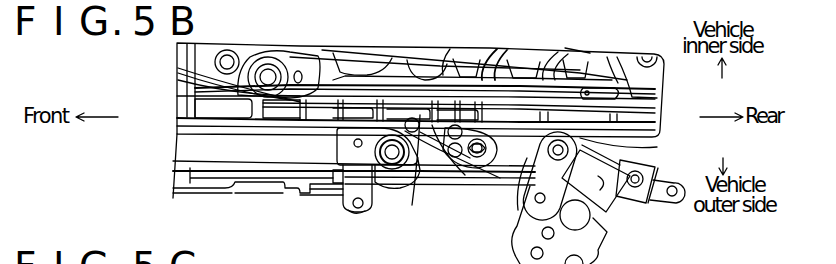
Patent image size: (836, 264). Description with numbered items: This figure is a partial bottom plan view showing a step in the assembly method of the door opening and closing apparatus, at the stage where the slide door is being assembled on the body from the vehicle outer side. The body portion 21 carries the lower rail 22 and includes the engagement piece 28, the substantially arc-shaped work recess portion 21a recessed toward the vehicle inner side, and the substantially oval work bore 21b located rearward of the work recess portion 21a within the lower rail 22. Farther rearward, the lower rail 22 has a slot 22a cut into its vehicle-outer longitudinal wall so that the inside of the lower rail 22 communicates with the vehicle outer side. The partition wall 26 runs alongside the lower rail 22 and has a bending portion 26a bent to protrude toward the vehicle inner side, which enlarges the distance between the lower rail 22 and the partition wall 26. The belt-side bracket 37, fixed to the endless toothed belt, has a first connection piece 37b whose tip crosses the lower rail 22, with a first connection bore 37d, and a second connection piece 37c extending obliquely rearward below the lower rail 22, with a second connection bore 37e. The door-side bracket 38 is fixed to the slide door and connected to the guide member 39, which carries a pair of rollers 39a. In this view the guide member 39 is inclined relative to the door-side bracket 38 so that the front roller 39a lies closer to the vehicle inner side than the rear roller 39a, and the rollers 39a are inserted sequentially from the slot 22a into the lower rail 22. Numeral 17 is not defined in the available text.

The seat slide device 17 is at (596, 0).
The body portion 21 is at (418, 186).
The work recess portion 21a is at (338, 46).
The work bore 21b is at (493, 176).
The lower rail 22 is at (396, 200).
The slot 22a is at (498, 150).
The partition wall 26 is at (533, 57).
The bending portion 26a is at (322, 55).
The engagement piece 28 is at (247, 195).
The belt-side bracket 37 is at (395, 182).
The first connection piece 37b is at (358, 214).
The second connection piece 37c is at (470, 198).
The first connection bore 37d is at (345, 204).
The second connection bore 37e is at (512, 46).
The door-side bracket 38 is at (605, 246).
The guide member 39 is at (526, 220).
The rollers 39a is at (656, 147).